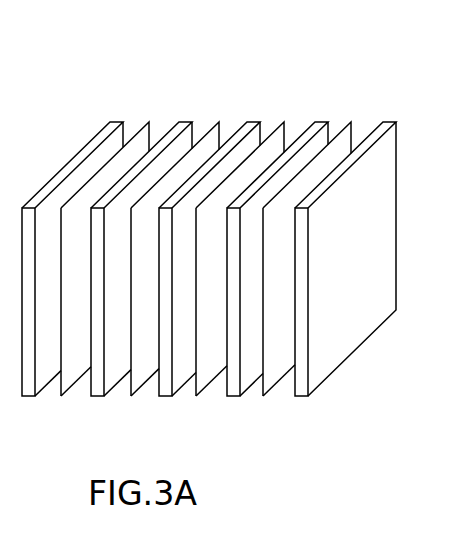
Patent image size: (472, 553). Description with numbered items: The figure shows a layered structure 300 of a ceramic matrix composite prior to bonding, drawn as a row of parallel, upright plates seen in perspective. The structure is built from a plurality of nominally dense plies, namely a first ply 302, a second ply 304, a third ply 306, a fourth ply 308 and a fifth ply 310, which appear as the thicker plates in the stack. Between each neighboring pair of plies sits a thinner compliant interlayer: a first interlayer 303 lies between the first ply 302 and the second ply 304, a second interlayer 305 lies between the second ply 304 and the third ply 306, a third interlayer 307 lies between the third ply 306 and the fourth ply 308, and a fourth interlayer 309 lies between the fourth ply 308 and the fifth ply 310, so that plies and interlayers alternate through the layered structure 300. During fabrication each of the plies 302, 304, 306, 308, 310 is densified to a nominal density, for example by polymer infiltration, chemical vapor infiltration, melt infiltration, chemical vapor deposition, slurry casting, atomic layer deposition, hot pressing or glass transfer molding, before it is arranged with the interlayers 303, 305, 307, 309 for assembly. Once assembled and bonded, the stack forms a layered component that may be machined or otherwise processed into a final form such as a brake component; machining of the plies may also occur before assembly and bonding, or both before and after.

The layered structure 300 is at (385, 55).
The first ply 302 is at (123, 122).
The first interlayer 303 is at (73, 370).
The second ply 304 is at (192, 122).
The second interlayer 305 is at (143, 372).
The third ply 306 is at (260, 122).
The third interlayer 307 is at (210, 370).
The fourth ply 308 is at (328, 122).
The fourth interlayer 309 is at (280, 370).
The fifth ply 310 is at (395, 122).